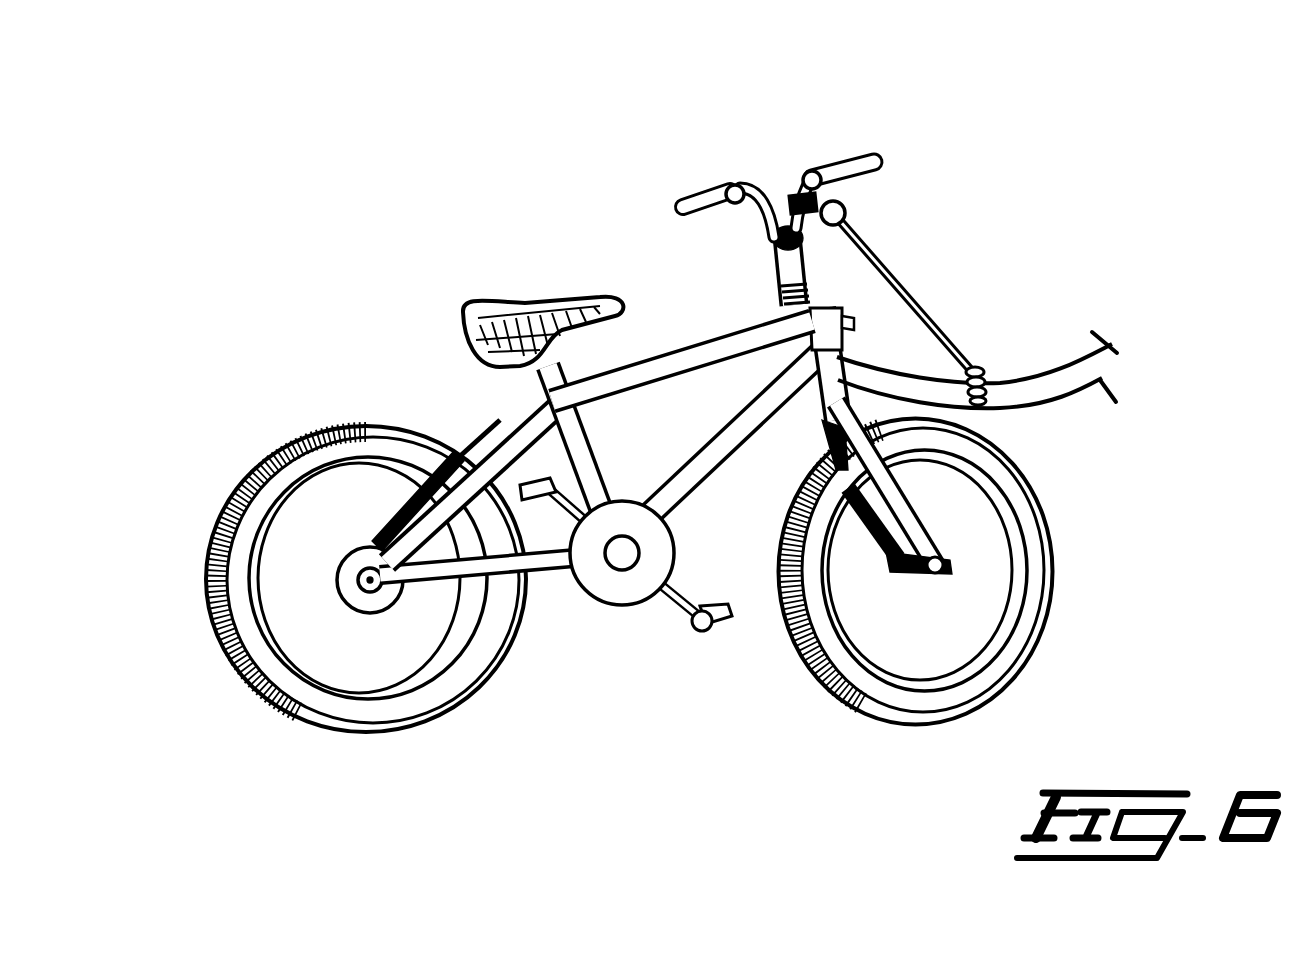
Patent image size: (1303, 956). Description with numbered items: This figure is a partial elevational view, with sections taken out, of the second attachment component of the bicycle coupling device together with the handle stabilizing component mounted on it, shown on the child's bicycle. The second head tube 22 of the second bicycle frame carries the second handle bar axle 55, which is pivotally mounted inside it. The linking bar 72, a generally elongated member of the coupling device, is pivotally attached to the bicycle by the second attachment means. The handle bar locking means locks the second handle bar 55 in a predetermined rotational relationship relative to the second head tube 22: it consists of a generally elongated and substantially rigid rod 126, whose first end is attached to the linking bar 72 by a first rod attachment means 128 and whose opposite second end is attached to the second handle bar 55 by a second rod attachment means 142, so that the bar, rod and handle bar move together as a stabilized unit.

The second head tube 22 is at (790, 317).
The second handle bar axle 55 is at (775, 264).
The linking bar 72 is at (1011, 370).
The rod 126 is at (893, 280).
The first rod attachment means 128 is at (978, 404).
The second rod attachment means 142 is at (790, 197).